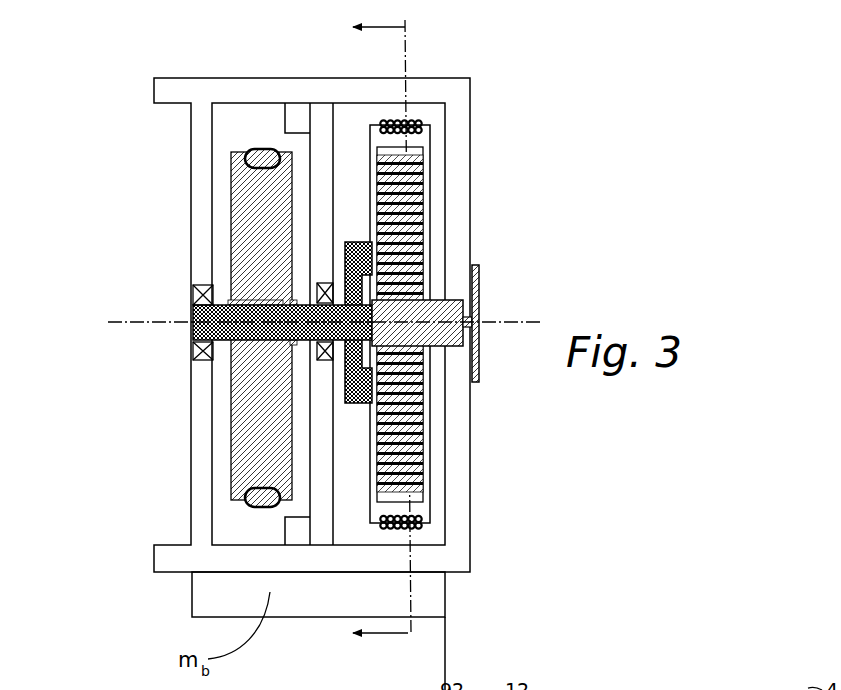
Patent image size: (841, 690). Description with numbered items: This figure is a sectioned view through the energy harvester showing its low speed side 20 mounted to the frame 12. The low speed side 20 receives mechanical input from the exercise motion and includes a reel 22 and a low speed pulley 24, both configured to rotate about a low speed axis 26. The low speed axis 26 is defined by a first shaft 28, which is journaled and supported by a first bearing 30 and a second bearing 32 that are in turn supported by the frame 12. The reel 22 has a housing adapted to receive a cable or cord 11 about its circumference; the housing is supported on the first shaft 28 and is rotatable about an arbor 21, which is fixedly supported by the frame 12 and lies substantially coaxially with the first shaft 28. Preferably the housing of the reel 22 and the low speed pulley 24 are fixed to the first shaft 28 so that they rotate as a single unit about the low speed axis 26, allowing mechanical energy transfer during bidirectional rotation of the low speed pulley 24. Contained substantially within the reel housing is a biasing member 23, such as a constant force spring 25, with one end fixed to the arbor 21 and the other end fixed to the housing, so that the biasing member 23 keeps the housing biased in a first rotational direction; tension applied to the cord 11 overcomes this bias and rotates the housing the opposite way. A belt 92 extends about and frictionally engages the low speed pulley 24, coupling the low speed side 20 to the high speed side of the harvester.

The cable or cord 11 is at (401, 126).
The frame 12 is at (425, 88).
The low speed side 20 is at (133, 186).
The arbor 21 is at (452, 300).
The reel 22 is at (432, 250).
The biasing member 23 is at (411, 391).
The low speed pulley 24 is at (240, 430).
The constant force spring 25 is at (418, 195).
The low speed axis 26 is at (529, 324).
The first shaft 28 is at (194, 313).
The first bearing 30 is at (200, 360).
The second bearing 32 is at (325, 283).
The belt 92 is at (263, 148).